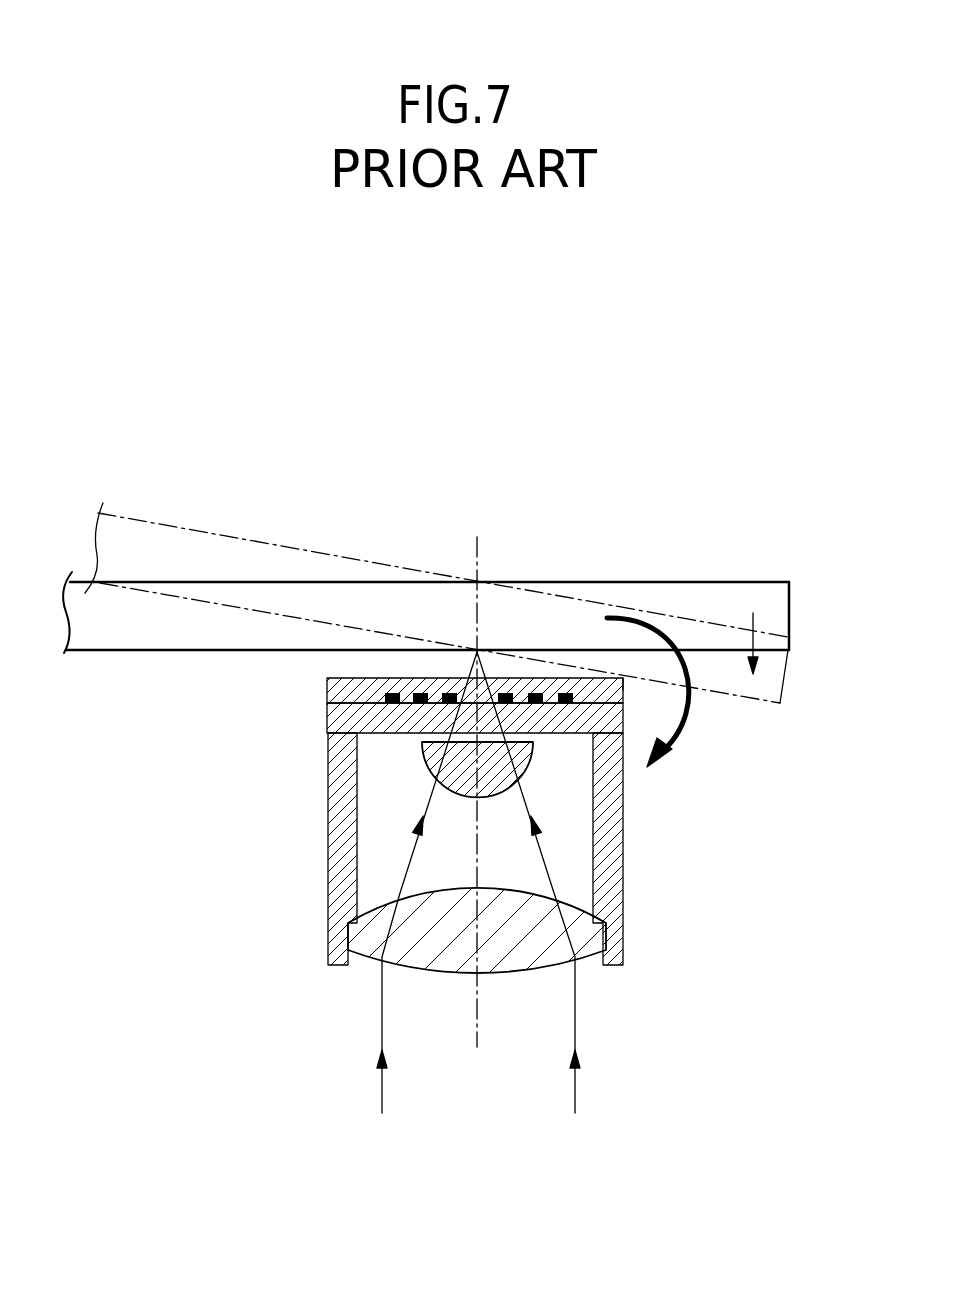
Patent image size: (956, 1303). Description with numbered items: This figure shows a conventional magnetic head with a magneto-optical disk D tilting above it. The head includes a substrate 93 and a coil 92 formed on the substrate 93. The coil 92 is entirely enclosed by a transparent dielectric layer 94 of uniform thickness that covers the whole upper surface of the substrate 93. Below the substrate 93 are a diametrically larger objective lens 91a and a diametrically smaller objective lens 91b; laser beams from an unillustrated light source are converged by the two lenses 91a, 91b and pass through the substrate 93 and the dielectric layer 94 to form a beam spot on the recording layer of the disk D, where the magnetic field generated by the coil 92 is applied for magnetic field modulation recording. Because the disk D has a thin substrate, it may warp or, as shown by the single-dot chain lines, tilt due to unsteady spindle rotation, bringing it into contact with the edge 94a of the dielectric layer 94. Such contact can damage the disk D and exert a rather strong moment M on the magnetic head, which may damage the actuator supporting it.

The transparent dielectric layer 94 is at (350, 687).
The edge of the dielectric layer 94a is at (627, 668).
The coil 92 is at (503, 703).
The substrate 93 is at (327, 717).
The diametrically larger objective lens 91a is at (515, 960).
The diametrically smaller objective lens 91b is at (498, 778).
The magneto-optical disk D is at (710, 597).
The moment M is at (682, 690).